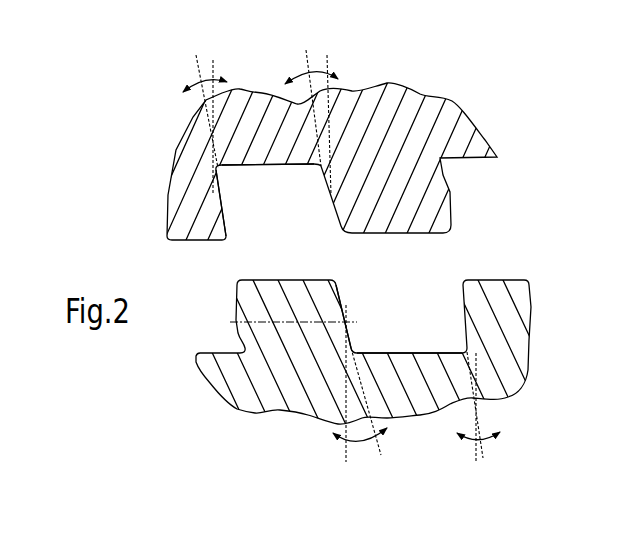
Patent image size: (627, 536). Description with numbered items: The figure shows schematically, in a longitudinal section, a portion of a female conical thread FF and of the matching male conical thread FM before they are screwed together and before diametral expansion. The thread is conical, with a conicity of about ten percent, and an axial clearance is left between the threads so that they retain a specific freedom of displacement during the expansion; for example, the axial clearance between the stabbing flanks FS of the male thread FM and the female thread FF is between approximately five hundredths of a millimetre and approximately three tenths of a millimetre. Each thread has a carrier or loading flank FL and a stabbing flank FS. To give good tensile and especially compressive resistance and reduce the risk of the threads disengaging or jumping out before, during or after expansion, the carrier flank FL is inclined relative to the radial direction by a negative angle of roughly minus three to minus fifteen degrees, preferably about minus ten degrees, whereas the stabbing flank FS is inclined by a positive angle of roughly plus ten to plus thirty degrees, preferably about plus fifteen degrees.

The female thread FF is at (498, 175).
The male thread FM is at (513, 259).
The stabbing flank FS is at (324, 205).
The carrier flank FL is at (230, 215).